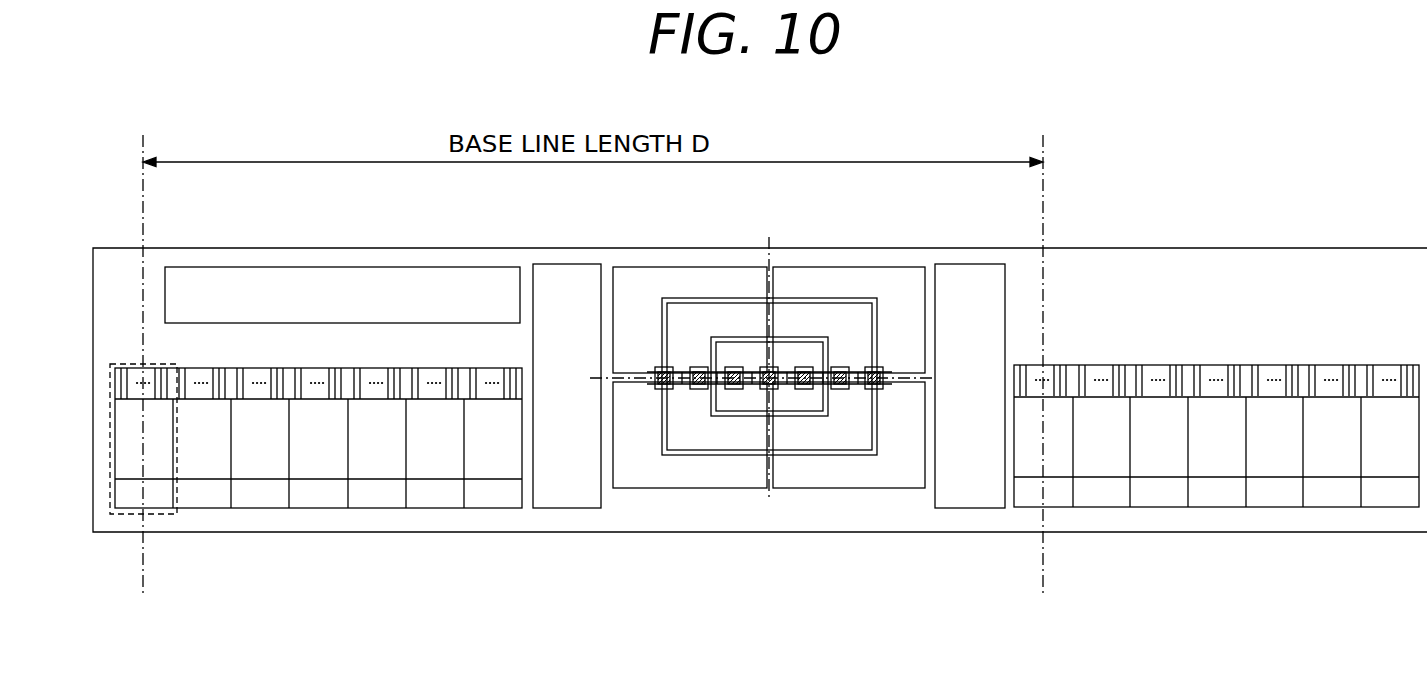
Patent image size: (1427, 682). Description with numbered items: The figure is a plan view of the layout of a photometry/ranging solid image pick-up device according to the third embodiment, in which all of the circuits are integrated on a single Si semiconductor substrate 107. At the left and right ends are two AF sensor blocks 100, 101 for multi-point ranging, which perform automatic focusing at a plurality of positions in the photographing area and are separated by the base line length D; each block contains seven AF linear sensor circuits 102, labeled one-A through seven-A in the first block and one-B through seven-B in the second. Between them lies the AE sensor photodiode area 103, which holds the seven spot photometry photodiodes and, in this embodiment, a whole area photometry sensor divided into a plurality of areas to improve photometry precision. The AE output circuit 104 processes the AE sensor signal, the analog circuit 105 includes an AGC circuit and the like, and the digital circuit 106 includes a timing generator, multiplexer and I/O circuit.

The AF sensor block 100 is at (436, 508).
The AF sensor block 101 is at (1226, 508).
The AF linear sensor circuit 102 is at (163, 514).
The AE sensor photodiode area 103 is at (817, 490).
The AE output circuit 104 is at (976, 265).
The analog circuit 105 is at (582, 265).
The digital circuit 106 is at (399, 267).
The Si semiconductor substrate 107 is at (1235, 248).